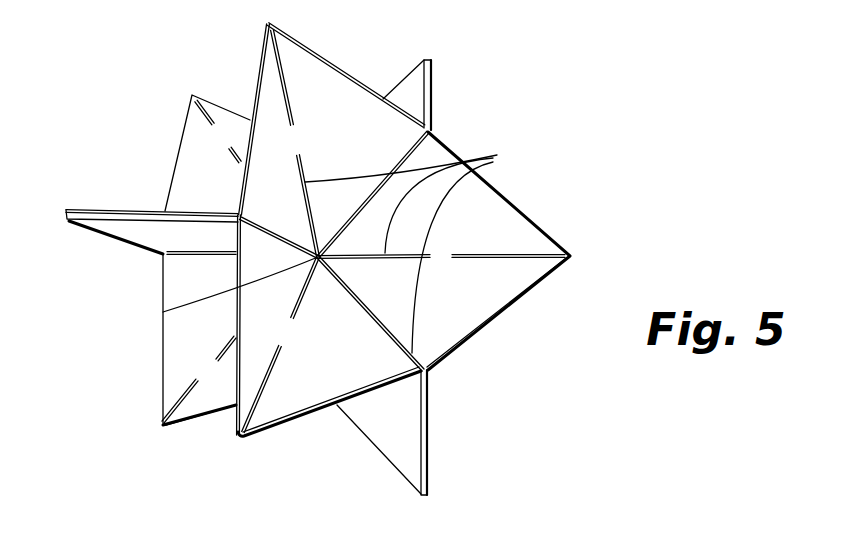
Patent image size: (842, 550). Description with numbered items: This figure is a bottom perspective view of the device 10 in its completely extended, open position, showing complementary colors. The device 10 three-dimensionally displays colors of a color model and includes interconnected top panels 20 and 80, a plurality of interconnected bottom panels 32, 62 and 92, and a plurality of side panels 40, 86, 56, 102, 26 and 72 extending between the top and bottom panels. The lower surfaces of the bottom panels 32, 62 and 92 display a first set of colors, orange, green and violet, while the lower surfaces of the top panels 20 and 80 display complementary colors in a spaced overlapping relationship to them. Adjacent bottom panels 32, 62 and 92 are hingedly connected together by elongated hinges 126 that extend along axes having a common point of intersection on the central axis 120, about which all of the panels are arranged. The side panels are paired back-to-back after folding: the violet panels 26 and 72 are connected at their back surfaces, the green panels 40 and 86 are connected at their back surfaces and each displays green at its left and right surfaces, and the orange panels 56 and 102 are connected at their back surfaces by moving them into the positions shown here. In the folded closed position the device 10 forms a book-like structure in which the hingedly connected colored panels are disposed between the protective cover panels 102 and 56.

The device 10 is at (556, 75).
The top panel 20 is at (175, 164).
The violet panel 26 is at (421, 58).
The bottom panel 32 is at (253, 76).
The green panel 40 is at (89, 208).
The orange panel 56 is at (433, 495).
The bottom panel 62 is at (541, 222).
The violet panel 72 is at (437, 62).
The top panel 80 is at (160, 357).
The green panel 86 is at (95, 225).
The bottom panel 92 is at (272, 437).
The orange panel 102 is at (418, 494).
The central axis 120 is at (165, 312).
The elongated hinges 126 is at (489, 154).